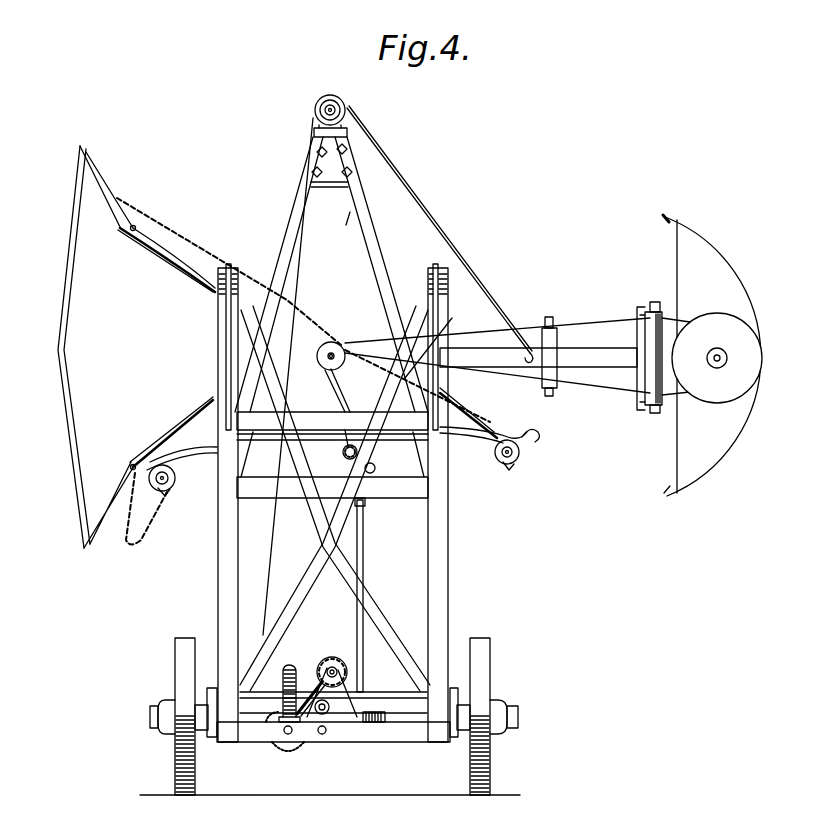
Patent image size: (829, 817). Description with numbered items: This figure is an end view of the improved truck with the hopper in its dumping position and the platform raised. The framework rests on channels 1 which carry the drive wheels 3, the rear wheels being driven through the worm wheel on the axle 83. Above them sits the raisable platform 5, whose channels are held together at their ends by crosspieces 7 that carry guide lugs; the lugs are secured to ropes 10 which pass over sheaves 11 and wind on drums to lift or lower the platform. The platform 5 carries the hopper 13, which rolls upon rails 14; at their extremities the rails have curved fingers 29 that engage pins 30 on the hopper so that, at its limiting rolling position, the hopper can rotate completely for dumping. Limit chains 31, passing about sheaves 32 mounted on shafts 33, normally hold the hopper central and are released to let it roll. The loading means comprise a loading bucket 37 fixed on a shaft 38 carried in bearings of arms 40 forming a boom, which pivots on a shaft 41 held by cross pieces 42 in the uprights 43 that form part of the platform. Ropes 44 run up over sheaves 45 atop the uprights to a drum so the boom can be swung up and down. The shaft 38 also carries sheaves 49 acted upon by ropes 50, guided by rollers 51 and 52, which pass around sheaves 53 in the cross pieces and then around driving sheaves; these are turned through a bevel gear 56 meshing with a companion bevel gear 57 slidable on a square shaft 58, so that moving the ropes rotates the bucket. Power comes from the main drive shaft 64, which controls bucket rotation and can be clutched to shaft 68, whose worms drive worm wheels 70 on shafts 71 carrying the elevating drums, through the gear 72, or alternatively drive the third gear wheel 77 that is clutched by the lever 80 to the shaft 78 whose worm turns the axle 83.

The channels 1 is at (240, 743).
The drive wheels 3 is at (193, 787).
The platform 5 is at (401, 494).
The crosspieces 7 is at (261, 490).
The ropes 10 is at (230, 357).
The sheaves 11 is at (232, 270).
The hopper 13 is at (82, 240).
The rails 14 is at (472, 432).
The curved fingers 29 is at (540, 437).
The pins 30 is at (134, 226).
The limit chains 31 is at (190, 242).
The sheaves 32 is at (176, 478).
The shafts 33 is at (168, 488).
The loading bucket 37 is at (680, 296).
The shaft 38 is at (718, 355).
The arms 40 is at (596, 347).
The shaft 41 is at (334, 352).
The cross pieces 42 is at (307, 366).
The uprights 43 is at (313, 208).
The ropes 44 is at (405, 183).
The sheaves 45 is at (325, 95).
The sheaves 49 is at (708, 322).
The ropes 50 is at (583, 321).
The rollers 51 is at (546, 337).
The rollers 52 is at (652, 363).
The sheaves 53 is at (328, 355).
The bevel gear 56 is at (344, 453).
The companion bevel gear 57 is at (375, 467).
The square shaft 58 is at (358, 610).
The shaft 64 is at (323, 735).
The shaft 68 is at (286, 735).
The worm wheels 70 is at (288, 666).
The shafts 71 is at (378, 694).
The gear 72 is at (298, 757).
The third gear wheel 77 is at (337, 657).
The shaft 78 is at (329, 667).
The lever 80 is at (311, 686).
The axle 83 is at (403, 714).